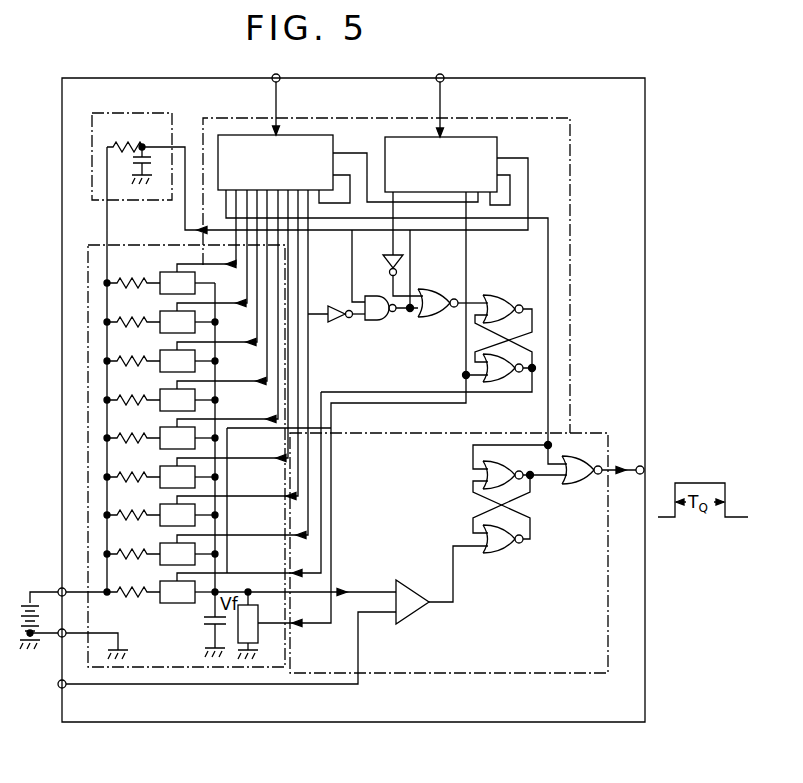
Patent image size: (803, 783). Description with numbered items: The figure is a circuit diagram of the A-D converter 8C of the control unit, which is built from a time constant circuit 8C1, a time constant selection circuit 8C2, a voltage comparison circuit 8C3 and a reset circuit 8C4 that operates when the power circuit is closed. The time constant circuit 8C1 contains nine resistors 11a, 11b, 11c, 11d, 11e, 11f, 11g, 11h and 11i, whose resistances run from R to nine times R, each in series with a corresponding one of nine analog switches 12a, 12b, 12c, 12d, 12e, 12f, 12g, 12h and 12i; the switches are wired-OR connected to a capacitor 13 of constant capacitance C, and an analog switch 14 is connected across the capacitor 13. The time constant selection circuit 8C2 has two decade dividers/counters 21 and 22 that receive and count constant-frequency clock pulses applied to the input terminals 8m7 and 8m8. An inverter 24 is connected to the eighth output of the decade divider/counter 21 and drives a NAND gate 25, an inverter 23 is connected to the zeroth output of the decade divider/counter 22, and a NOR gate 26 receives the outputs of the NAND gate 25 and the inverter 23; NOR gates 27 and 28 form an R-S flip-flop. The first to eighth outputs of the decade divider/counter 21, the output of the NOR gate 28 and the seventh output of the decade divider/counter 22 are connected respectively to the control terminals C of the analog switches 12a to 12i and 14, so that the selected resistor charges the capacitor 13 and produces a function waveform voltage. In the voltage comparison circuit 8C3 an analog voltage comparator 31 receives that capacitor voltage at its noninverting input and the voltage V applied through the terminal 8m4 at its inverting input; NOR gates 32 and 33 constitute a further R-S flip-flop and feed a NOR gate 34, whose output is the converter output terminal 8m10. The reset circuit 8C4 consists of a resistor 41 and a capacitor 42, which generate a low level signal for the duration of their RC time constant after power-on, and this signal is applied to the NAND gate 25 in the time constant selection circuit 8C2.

The A-D converter 8C is at (623, 84).
The time constant circuit 8C1 is at (180, 245).
The time constant selection circuit 8C2 is at (572, 265).
The voltage comparison circuit 8C3 is at (490, 676).
The reset circuit 8C4 is at (96, 100).
The terminal 8m4 is at (60, 684).
The input terminal 8m7 is at (280, 76).
The input terminal 8m8 is at (444, 76).
The output terminal 8m10 is at (644, 472).
The resistor 11a is at (131, 273).
The resistor 11b is at (131, 312).
The resistor 11c is at (142, 351).
The resistor 11d is at (142, 390).
The resistor 11e is at (142, 428).
The resistor 11f is at (139, 467).
The resistor 11g is at (142, 505).
The resistor 11h is at (142, 544).
The resistor 11i is at (136, 582).
The analog switch 12a is at (165, 278).
The analog switch 12b is at (165, 317).
The analog switch 12c is at (200, 369).
The analog switch 12d is at (200, 408).
The analog switch 12e is at (200, 446).
The analog switch 12f is at (200, 485).
The analog switch 12g is at (200, 523).
The analog switch 12h is at (200, 557).
The analog switch 12i is at (169, 603).
The capacitor 13 is at (204, 620).
The analog switch 14 is at (256, 638).
The decade divider/counter 21 is at (333, 147).
The decade divider/counter 22 is at (497, 149).
The inverter 23 is at (382, 270).
The inverter 24 is at (343, 326).
The NAND gate 25 is at (375, 320).
The NOR gate 26 is at (440, 283).
The NOR gate 27 is at (494, 300).
The NOR gate 28 is at (495, 381).
The analog voltage comparator 31 is at (428, 592).
The NOR gate 32 is at (496, 548).
The NOR gate 33 is at (496, 466).
The NOR gate 34 is at (578, 482).
The resistor 41 is at (127, 144).
The capacitor 42 is at (154, 158).